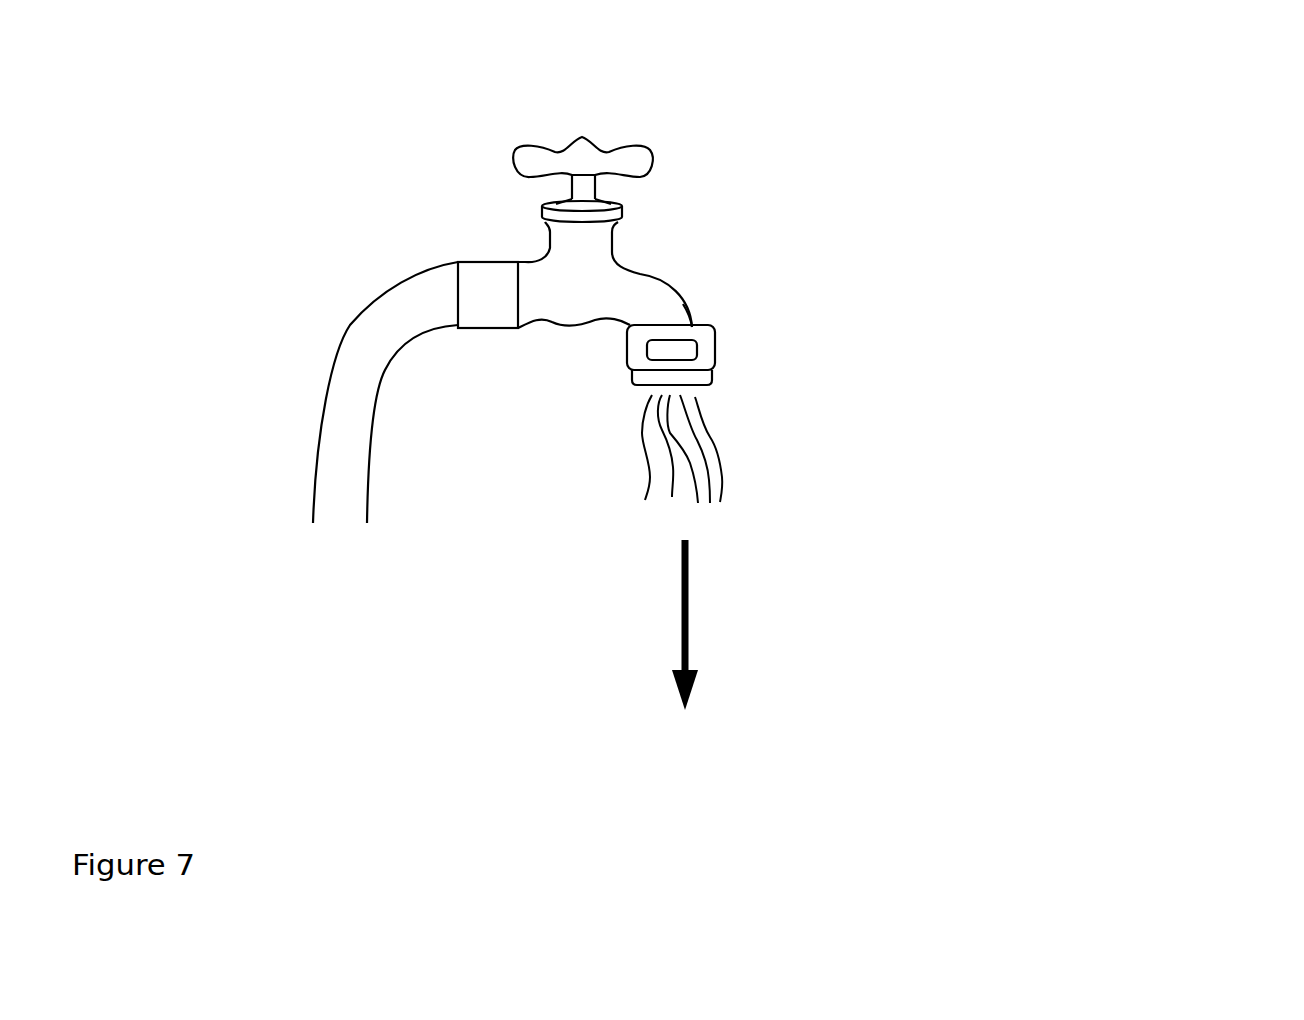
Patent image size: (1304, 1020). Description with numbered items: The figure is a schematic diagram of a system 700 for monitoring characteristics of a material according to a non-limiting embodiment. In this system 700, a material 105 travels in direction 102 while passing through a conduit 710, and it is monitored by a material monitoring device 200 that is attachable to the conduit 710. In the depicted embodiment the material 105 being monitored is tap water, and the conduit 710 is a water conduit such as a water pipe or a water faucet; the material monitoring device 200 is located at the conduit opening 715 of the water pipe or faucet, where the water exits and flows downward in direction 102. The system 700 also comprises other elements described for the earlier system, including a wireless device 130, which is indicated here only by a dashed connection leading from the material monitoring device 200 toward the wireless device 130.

The system 700 is at (258, 114).
The conduit 710 is at (653, 271).
The conduit opening 715 is at (695, 324).
The wireless device 130 is at (718, 353).
The material monitoring device 200 is at (717, 368).
The material 105 is at (746, 509).
The direction 102 is at (679, 585).